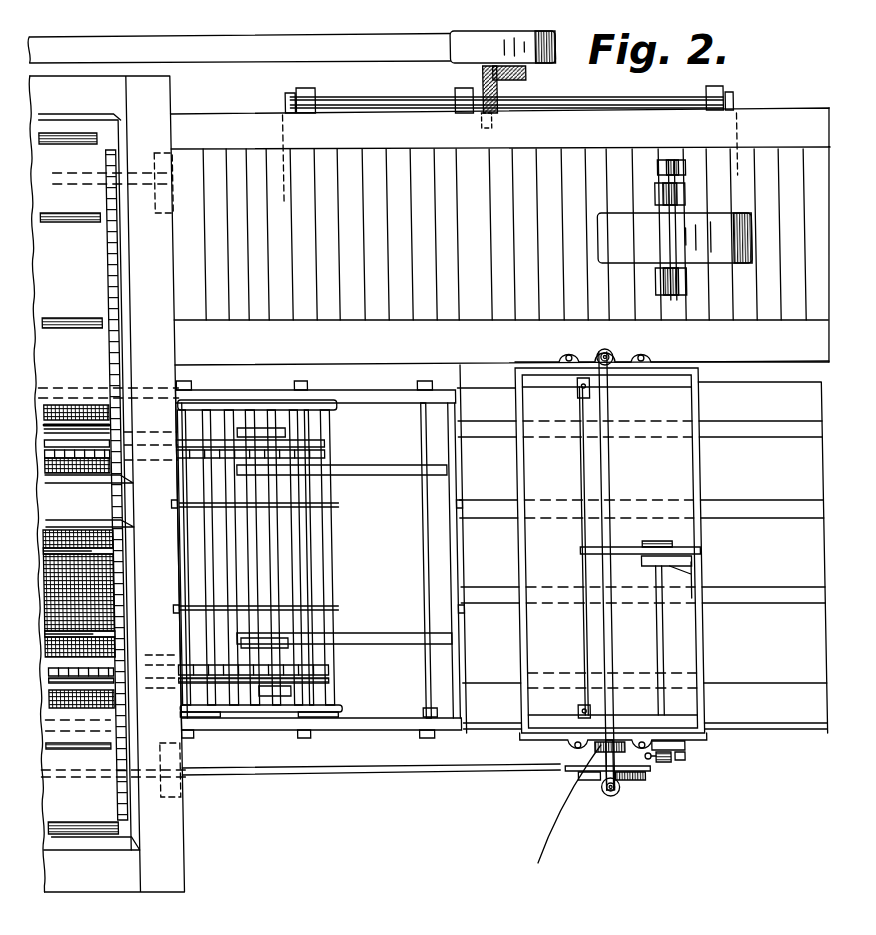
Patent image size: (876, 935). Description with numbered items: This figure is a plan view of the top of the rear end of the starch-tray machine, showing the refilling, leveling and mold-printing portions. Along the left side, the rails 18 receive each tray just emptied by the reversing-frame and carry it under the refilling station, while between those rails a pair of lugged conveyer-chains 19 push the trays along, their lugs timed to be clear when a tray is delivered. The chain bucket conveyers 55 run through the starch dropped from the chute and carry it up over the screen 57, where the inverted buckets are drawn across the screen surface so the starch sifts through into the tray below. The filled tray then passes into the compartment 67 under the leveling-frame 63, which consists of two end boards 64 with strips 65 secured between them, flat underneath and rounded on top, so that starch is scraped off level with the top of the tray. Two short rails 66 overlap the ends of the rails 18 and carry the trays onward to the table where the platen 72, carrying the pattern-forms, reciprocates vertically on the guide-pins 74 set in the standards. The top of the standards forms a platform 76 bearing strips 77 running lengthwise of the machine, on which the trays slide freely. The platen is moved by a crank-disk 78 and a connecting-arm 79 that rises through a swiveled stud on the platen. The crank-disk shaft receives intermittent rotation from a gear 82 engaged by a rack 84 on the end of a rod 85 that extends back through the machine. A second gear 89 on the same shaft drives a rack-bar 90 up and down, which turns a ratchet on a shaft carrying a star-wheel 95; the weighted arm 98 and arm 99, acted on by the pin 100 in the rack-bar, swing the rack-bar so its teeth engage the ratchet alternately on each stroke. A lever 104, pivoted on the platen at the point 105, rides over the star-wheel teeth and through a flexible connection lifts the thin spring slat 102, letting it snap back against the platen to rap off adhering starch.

The rails 18 is at (98, 438).
The conveyer-chains 19 is at (95, 450).
The chain bucket conveyers 55 is at (113, 292).
The screen 57 is at (81, 583).
The leveling-frame 63 is at (266, 557).
The end boards 64 is at (240, 410).
The strips 65 is at (237, 603).
The short rails 66 is at (407, 468).
The compartment 67 is at (317, 559).
The platen 72 is at (610, 550).
The guide-pins 74 is at (575, 352).
The platform 76 is at (642, 552).
The strips 77 is at (786, 427).
The crank-disk 78 is at (631, 780).
The connecting-arm 79 is at (611, 352).
The gear 82 is at (590, 755).
The rack 84 is at (547, 775).
The rod 85 is at (340, 770).
The gear 89 is at (555, 809).
The rack-bar 90 is at (680, 745).
The star-wheel 95 is at (657, 543).
The weighted arm 98 is at (648, 755).
The arm 99 is at (682, 755).
The pin 100 is at (680, 758).
The spring slat 102 is at (581, 533).
The lever 104 is at (626, 550).
The pivot point 105 is at (689, 553).